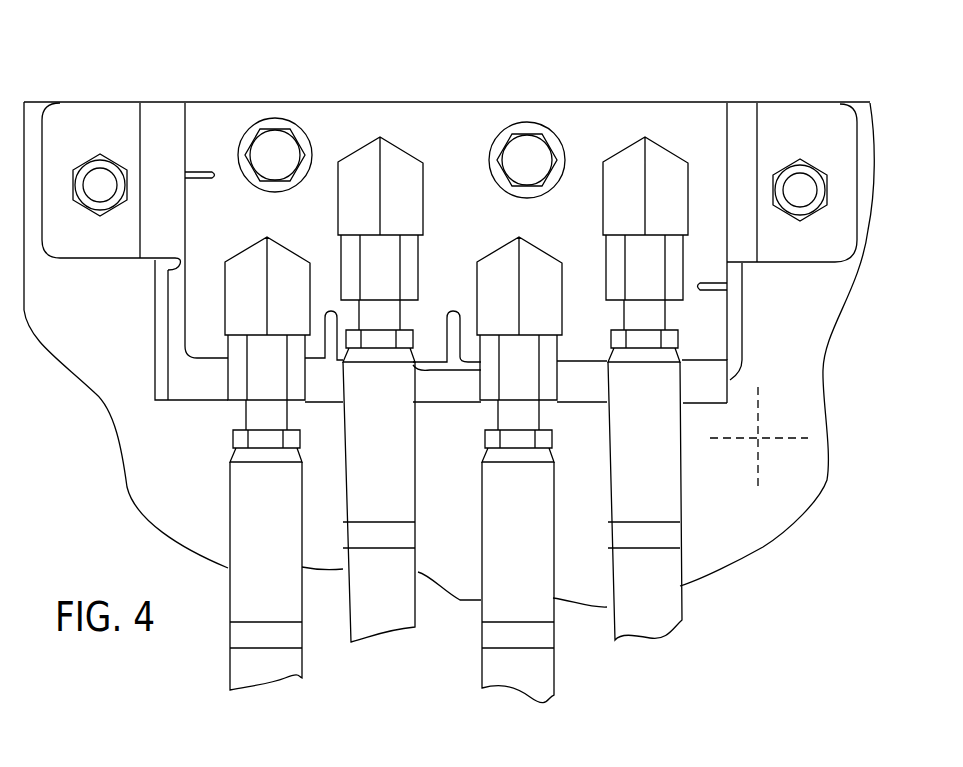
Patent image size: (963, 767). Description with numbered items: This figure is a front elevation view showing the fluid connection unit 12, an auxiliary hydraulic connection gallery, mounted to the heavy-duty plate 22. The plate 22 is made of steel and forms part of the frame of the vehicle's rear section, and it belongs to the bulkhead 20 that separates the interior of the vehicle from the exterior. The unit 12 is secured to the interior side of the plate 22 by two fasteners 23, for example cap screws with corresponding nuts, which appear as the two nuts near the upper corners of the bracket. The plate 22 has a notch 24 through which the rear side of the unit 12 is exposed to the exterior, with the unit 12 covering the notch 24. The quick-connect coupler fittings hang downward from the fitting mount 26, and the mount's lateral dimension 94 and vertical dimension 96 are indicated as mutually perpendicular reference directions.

The fluid connection unit 12 is at (692, 90).
The bulkhead 20 is at (222, 86).
The heavy-duty plate 22 is at (763, 532).
The fasteners 23 is at (108, 180).
The notch 24 is at (153, 322).
The fitting mount 26 is at (466, 130).
The lateral dimension 94 is at (733, 441).
The vertical dimension 96 is at (760, 467).